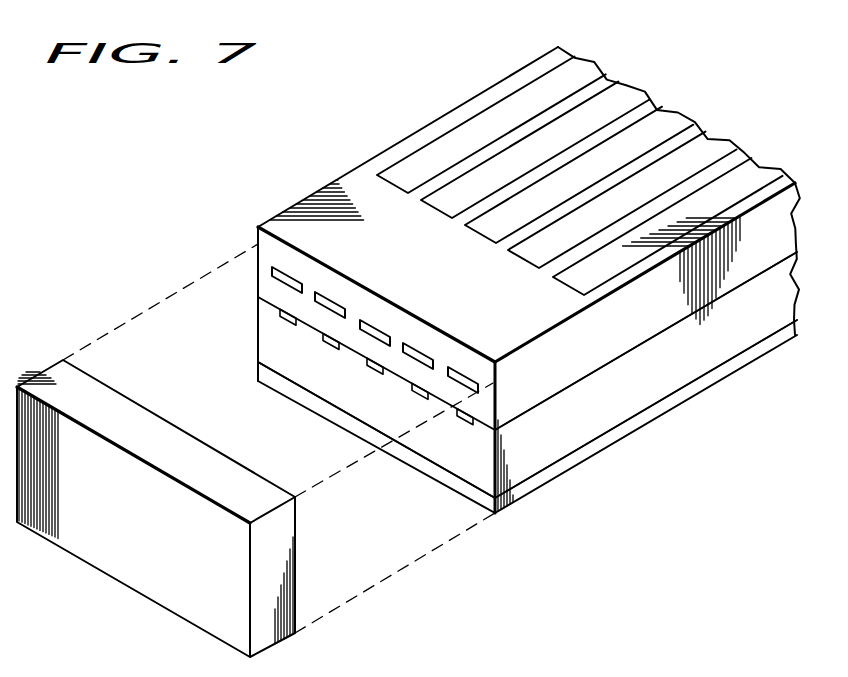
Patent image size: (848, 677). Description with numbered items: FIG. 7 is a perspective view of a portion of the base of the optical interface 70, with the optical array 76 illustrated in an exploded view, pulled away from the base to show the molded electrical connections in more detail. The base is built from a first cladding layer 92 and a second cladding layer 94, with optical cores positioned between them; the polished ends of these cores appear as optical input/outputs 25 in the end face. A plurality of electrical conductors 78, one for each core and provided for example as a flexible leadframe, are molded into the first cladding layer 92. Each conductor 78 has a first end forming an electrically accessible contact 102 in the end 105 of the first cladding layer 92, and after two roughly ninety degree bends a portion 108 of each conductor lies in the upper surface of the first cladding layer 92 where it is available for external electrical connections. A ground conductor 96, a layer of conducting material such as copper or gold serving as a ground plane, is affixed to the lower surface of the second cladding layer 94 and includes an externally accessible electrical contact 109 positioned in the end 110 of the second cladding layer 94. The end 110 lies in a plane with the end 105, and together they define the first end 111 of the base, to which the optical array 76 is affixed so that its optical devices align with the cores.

The connector assembly 70 is at (156, 171).
The optical array 76 is at (135, 573).
The electrical conductors 78 is at (618, 98).
The portion of electrical conductor 108 is at (575, 74).
The first cladding layer 92 is at (733, 273).
The second cladding layer 94 is at (655, 383).
The ground conductor 96 is at (586, 447).
The electrically accessible contact 102 is at (371, 325).
The end of first cladding layer 105 is at (441, 346).
The optical input/output 25 is at (284, 313).
The first end of base 111 is at (348, 400).
The end of second cladding layer 110 is at (416, 446).
The externally accessible electrical contact 109 is at (452, 487).